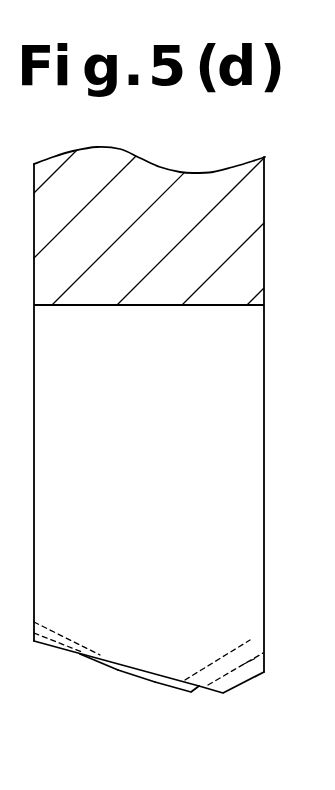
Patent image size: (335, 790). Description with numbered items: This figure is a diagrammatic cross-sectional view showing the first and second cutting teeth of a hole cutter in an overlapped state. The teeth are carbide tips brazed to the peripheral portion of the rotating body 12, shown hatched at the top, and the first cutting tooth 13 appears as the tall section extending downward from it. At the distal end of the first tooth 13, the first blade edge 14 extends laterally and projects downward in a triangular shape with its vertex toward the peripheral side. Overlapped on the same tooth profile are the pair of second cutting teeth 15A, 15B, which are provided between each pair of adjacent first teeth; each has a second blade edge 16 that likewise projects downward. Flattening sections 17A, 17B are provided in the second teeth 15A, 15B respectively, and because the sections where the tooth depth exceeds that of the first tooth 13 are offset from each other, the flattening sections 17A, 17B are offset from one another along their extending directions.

The body 12 is at (205, 185).
The first cutting tooth 13 is at (253, 408).
The first blade edge 14 is at (45, 647).
The second cutting tooth 15A is at (244, 667).
The second cutting tooth 15B is at (247, 640).
The second blade edge 16 is at (88, 660).
The flattening section 17A is at (173, 695).
The flattening section 17B is at (127, 675).